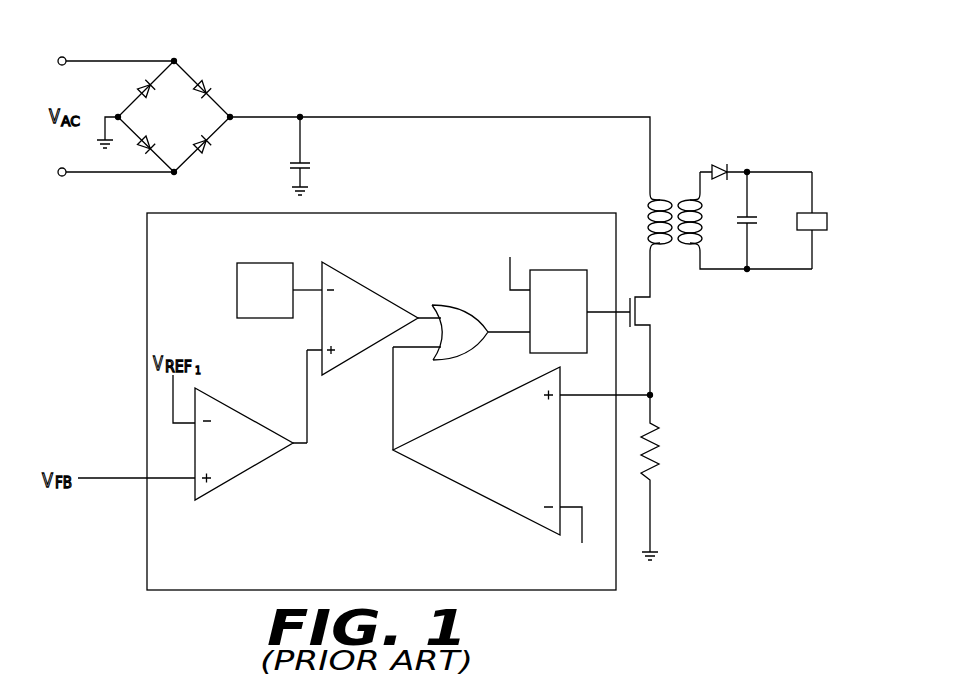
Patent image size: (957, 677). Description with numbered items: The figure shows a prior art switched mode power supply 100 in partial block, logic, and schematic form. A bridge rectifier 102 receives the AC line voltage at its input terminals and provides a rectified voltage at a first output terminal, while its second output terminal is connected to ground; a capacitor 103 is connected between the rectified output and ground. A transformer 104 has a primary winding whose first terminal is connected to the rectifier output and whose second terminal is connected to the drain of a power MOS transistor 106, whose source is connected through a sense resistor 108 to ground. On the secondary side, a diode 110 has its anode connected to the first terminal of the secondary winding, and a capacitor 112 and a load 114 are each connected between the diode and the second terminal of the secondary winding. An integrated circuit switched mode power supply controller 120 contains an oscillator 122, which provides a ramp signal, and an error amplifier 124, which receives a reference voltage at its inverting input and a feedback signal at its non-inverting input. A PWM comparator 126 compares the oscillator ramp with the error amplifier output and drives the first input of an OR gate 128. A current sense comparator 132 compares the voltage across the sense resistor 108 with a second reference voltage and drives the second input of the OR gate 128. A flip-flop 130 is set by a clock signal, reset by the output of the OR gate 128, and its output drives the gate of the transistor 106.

The switched mode power supply 100 is at (767, 51).
The bridge rectifier 102 is at (198, 63).
The capacitor 103 is at (305, 162).
The transformer 104 is at (668, 126).
The power metal oxide semiconductor (MOS) transistor 106 is at (660, 308).
The sense resistor 108 is at (680, 446).
The diode 110 is at (713, 162).
The capacitor 112 is at (752, 213).
The load 114 is at (814, 213).
The integrated circuit switched mode power supply controller 120 is at (424, 213).
The oscillator 122 is at (263, 263).
The error amplifier 124 is at (221, 402).
The pulse width modulator (PWM) comparator 126 is at (368, 291).
The OR gate 128 is at (446, 305).
The flip-flop 130 is at (557, 270).
The current sense comparator 132 is at (479, 410).